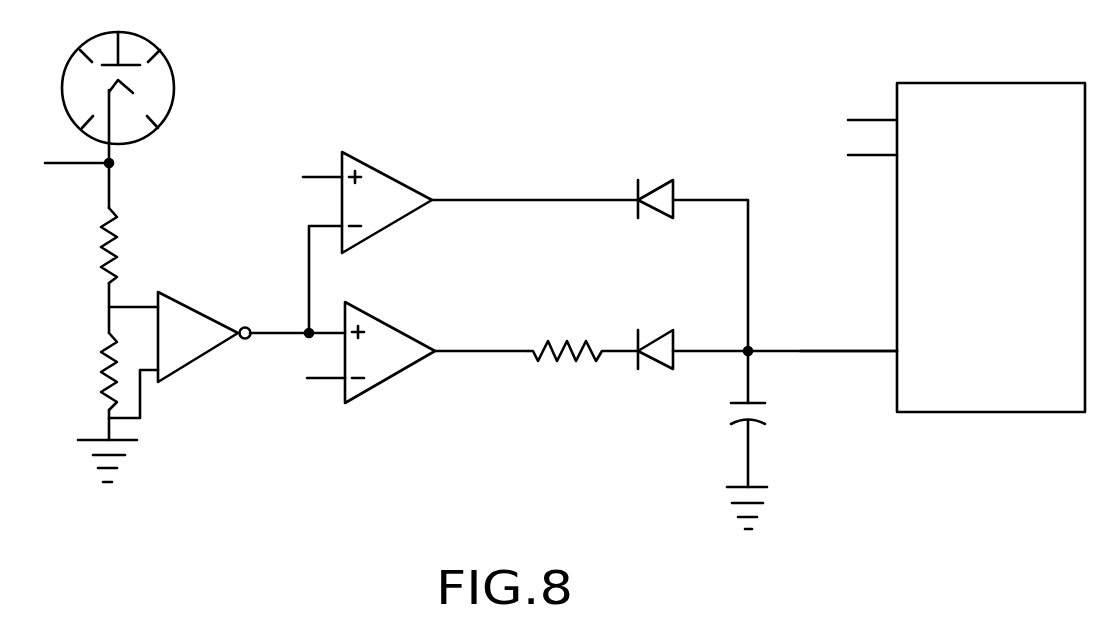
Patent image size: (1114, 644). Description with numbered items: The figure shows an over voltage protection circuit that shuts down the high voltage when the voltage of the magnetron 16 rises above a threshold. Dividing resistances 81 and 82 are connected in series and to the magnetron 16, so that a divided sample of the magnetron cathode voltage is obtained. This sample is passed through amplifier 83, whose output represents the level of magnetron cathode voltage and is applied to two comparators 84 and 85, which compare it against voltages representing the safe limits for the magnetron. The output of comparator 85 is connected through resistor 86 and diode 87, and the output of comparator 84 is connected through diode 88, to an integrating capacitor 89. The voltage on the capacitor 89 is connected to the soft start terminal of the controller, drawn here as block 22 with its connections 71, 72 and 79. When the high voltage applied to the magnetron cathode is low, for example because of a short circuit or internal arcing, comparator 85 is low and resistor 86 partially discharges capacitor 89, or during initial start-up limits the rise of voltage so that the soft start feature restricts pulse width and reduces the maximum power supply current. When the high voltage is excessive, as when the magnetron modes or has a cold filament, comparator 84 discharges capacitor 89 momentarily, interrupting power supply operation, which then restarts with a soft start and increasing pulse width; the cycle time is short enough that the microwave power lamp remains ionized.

The magnetron 16 is at (109, 114).
The dividing resistance 81 is at (100, 257).
The dividing resistance 82 is at (100, 398).
The amplifier 83 is at (218, 319).
The comparator 84 is at (408, 183).
The comparator 85 is at (409, 332).
The resistor 86 is at (546, 346).
The diode 87 is at (654, 334).
The diode 88 is at (651, 183).
The integrating capacitor 89 is at (757, 411).
The microprocessor 22 is at (1017, 157).
The input line 71 is at (872, 105).
The input line 72 is at (872, 142).
The input line 79 is at (848, 338).